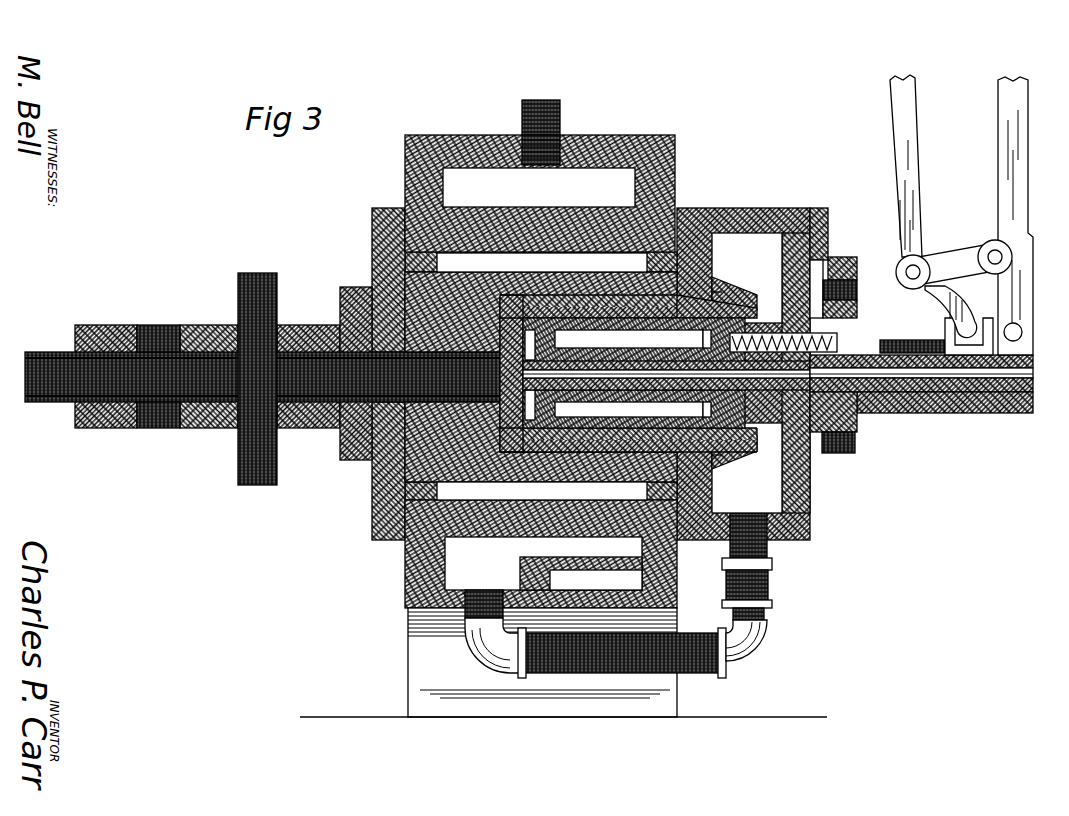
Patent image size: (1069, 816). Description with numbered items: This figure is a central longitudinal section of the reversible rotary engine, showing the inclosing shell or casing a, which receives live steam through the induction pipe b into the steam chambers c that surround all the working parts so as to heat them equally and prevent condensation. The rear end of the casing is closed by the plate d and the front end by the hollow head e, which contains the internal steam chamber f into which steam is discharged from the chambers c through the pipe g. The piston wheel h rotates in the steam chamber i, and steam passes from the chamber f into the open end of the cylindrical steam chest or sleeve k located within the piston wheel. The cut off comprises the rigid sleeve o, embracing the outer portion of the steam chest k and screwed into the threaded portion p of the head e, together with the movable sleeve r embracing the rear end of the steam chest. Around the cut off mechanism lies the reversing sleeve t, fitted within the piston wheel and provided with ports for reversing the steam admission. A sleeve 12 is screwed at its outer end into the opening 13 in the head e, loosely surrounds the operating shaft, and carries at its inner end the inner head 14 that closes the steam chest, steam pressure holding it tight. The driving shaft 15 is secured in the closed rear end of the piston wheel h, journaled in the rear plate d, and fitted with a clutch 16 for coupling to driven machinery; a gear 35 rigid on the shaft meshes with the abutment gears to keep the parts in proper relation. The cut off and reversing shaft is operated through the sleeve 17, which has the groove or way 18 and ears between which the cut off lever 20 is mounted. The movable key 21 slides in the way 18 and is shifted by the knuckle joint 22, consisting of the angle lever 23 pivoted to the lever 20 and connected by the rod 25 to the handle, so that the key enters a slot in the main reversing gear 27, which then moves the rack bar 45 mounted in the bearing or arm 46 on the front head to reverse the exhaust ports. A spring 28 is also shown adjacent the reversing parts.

The inclosing shell or casing a is at (677, 190).
The live steam induction pipe b is at (560, 128).
The steam chambers c is at (542, 379).
The rear plate d is at (372, 462).
The front head e is at (812, 515).
The internal steam chamber f is at (747, 373).
The pipe g is at (700, 674).
The piston wheel h is at (372, 470).
The steam chamber i is at (542, 377).
The cylindrical steam chest or sleeve k is at (612, 380).
The rigid sleeve o is at (709, 375).
The threaded portion p is at (733, 292).
The sleeve r is at (540, 298).
The reversing sleeve or cylinder t is at (600, 470).
The sleeve 12 is at (634, 340).
The opening 13 is at (747, 373).
The inner head 14 is at (634, 409).
The driving shaft 15 is at (337, 402).
The clutch 16 is at (172, 394).
The sleeve 17 is at (918, 392).
The groove or way 18 is at (878, 340).
The cut off lever 20 is at (998, 182).
The movable key 21 is at (940, 340).
The knuckle joint 22 is at (948, 310).
The angle lever 23 is at (954, 264).
The rod 25 is at (917, 140).
The main reversing gear 27 is at (840, 453).
The spring 28 is at (783, 343).
The gear 35 is at (274, 273).
The rack bar 45 is at (845, 292).
The bearing or arm 46 is at (840, 262).